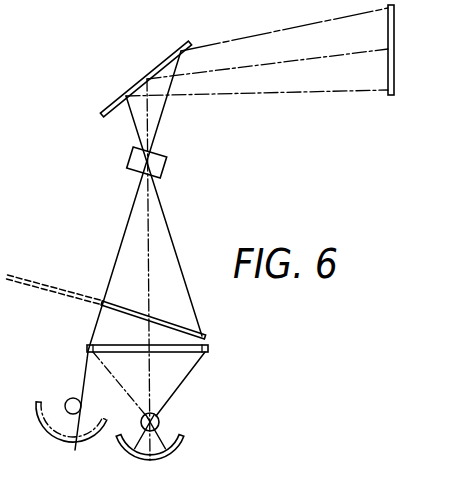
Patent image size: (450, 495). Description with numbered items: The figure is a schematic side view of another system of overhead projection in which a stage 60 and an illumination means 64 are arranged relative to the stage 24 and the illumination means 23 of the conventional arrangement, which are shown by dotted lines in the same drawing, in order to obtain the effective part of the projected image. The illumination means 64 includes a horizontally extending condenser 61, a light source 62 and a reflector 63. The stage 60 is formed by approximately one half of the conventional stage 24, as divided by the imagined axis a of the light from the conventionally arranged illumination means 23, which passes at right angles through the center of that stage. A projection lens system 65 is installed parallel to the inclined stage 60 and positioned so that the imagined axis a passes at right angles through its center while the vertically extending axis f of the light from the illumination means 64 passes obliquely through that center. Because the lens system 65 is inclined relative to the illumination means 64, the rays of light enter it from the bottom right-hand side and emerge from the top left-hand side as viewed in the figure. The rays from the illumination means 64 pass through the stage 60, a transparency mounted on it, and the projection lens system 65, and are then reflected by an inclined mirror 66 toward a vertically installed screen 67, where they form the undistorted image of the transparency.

The inclined mirror 66 is at (158, 72).
The screen 67 is at (394, 40).
The projection lens system 65 is at (165, 160).
The vertically extending axis f is at (148, 236).
The stage 24 is at (38, 282).
The stage 60 is at (200, 332).
The condenser 61 is at (112, 347).
The illumination means 64 is at (190, 361).
The imagined axis a is at (83, 373).
The light source 62 is at (160, 421).
The reflector 63 is at (184, 440).
The illumination means 23 is at (74, 414).